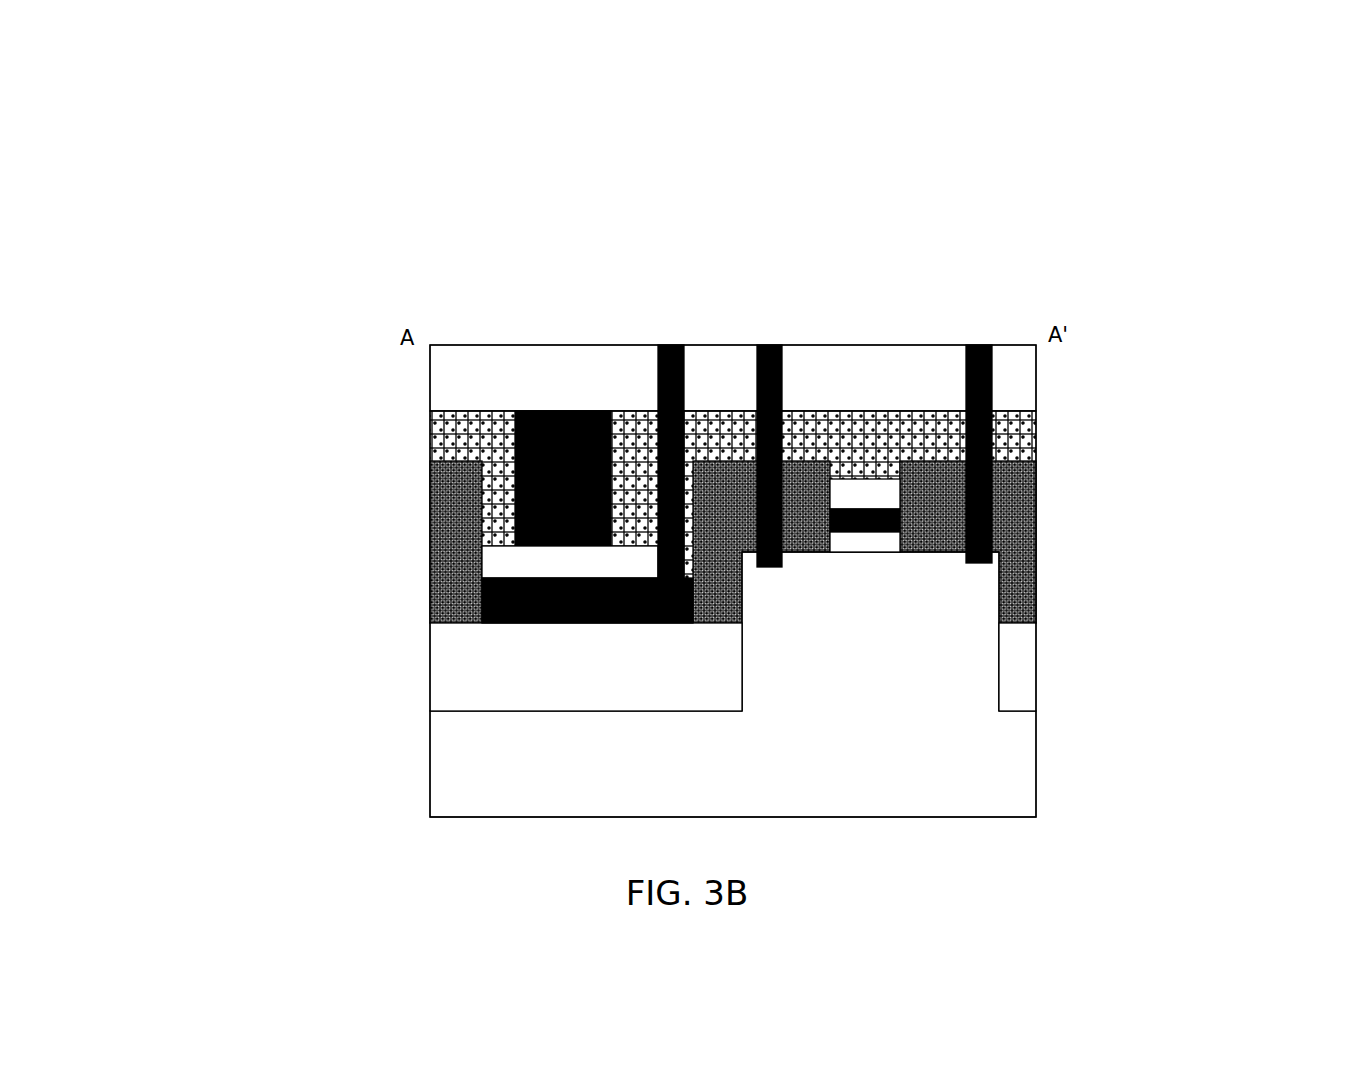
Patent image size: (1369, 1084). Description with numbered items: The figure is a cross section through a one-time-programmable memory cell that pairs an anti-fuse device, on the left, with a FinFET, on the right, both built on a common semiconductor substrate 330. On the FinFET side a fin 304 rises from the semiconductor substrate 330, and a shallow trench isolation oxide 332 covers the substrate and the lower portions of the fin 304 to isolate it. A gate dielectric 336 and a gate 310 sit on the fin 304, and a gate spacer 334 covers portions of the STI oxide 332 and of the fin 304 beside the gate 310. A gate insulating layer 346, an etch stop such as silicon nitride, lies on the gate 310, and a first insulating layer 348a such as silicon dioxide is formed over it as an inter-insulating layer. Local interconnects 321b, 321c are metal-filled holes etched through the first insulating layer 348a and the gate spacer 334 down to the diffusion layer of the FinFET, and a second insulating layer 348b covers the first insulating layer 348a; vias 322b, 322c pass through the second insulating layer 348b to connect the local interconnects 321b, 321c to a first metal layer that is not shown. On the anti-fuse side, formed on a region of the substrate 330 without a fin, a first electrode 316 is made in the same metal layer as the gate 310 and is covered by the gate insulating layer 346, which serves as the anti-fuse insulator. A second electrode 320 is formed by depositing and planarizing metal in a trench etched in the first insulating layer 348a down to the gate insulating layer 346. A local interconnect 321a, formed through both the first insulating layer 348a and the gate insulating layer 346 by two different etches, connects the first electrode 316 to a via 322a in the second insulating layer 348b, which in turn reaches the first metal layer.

The second insulating layer 348b is at (430, 378).
The first insulating layer 348a is at (440, 438).
The gate spacer 334 is at (440, 483).
The semiconductor substrate 330 is at (733, 684).
The fin 304 is at (870, 631).
The shallow trench isolation (STI) oxide 332 is at (733, 667).
The second electrode 320 is at (572, 422).
The gate insulating layer 346 is at (1104, 499).
The first electrode 316 is at (508, 597).
The gate 310 is at (892, 520).
The gate dielectric 336 is at (892, 540).
The via 322a is at (663, 345).
The local interconnect 321a is at (683, 448).
The via 322b is at (770, 345).
The local interconnect 321b is at (783, 442).
The via 322c is at (977, 345).
The local interconnect 321c is at (978, 438).